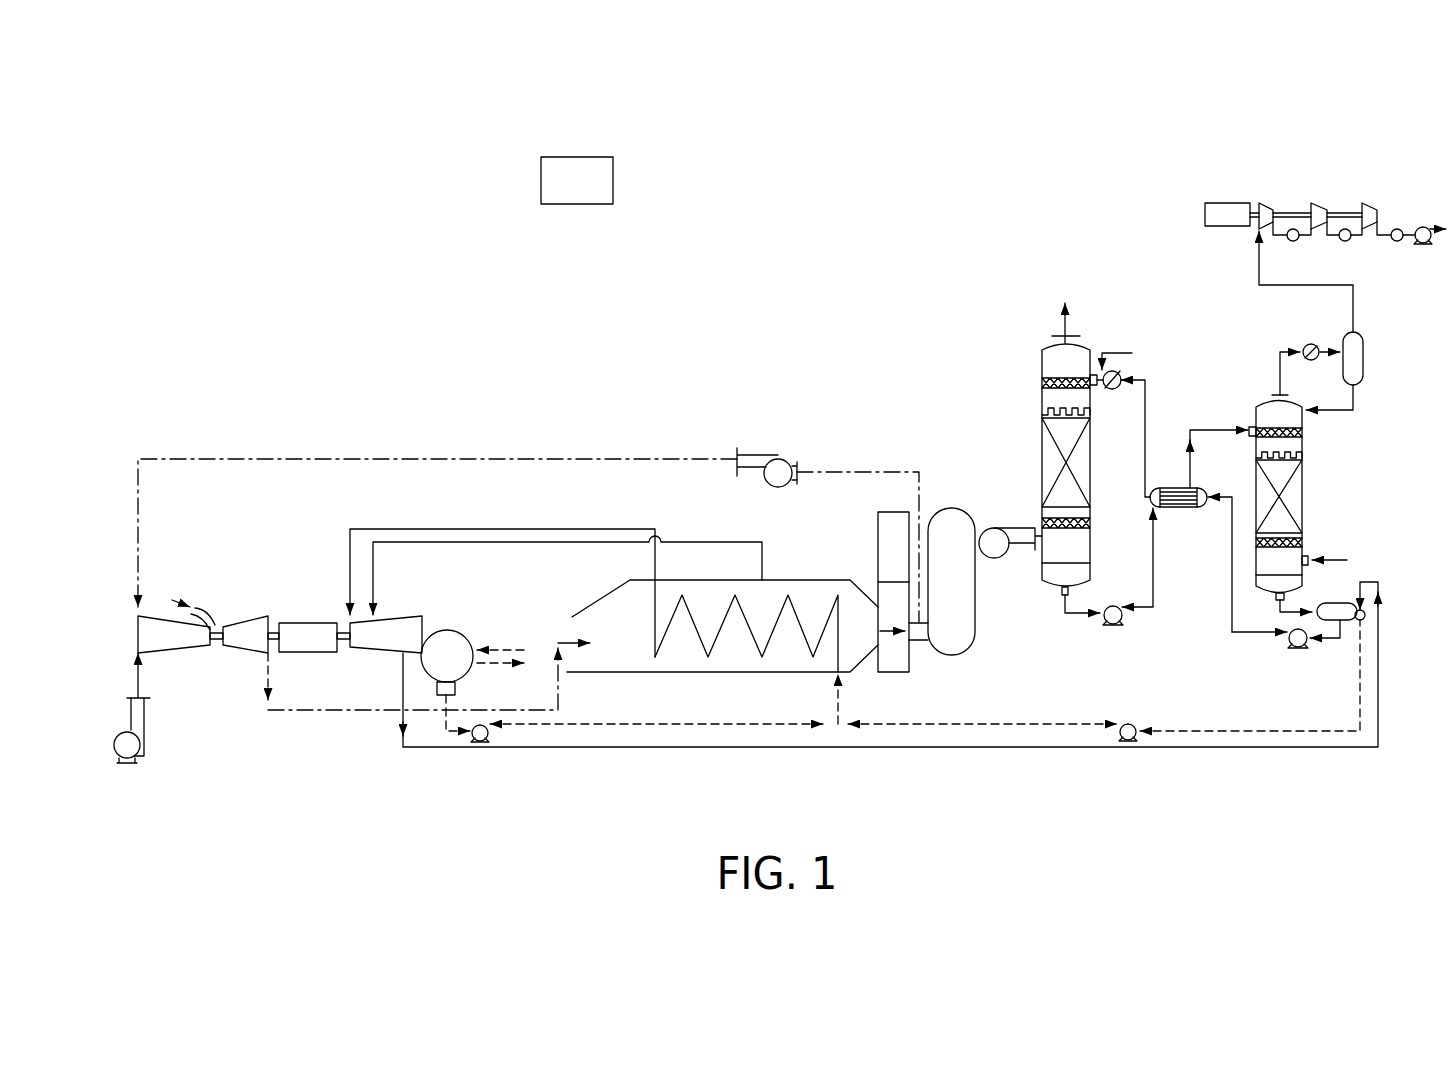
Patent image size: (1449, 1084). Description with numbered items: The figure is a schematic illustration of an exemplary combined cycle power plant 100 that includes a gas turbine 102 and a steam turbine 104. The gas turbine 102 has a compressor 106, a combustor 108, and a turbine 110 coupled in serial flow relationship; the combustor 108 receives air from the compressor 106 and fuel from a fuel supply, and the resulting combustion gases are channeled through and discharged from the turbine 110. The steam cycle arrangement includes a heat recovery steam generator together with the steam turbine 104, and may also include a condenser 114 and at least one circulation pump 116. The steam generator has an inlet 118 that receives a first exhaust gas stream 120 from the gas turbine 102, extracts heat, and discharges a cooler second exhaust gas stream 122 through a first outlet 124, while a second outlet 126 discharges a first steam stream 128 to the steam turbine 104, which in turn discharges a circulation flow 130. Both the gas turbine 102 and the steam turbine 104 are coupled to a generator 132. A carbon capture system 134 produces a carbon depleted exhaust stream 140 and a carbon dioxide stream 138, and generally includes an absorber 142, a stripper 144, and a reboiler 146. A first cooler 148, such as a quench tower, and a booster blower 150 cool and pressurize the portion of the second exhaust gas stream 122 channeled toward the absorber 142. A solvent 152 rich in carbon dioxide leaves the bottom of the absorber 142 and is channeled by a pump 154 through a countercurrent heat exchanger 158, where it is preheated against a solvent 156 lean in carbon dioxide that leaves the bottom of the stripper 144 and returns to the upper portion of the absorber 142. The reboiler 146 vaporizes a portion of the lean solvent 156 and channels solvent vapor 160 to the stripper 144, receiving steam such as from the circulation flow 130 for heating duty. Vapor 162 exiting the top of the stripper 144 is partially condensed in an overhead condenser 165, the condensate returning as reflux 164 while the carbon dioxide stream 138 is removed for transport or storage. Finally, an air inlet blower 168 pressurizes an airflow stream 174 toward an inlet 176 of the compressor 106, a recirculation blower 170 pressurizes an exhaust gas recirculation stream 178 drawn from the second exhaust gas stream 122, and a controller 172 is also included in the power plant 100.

The combined cycle power plant 100 is at (875, 178).
The gas turbine 102 is at (215, 669).
The steam turbine 104 is at (399, 615).
The compressor 106 is at (150, 612).
The combustor 108 is at (213, 612).
The turbine 110 is at (247, 617).
The condenser 114 is at (460, 630).
The circulation pump 116 is at (490, 742).
The inlet 118 is at (570, 626).
The first exhaust gas stream 120 is at (571, 646).
The second exhaust gas stream 122 is at (887, 632).
The first outlet 124 is at (862, 612).
The second outlet 126 is at (666, 570).
The first steam stream 128 is at (590, 528).
The circulation flow 130 is at (398, 735).
The generator 132 is at (302, 654).
The carbon capture system 134 is at (1299, 235).
The carbon dioxide stream 138 is at (1425, 226).
The carbon depleted exhaust stream 140 is at (1068, 331).
The absorber 142 is at (1040, 366).
The stripper 144 is at (1305, 442).
The reboiler 146 is at (1350, 604).
The first cooler 148 is at (977, 627).
The booster blower 150 is at (998, 527).
The solvent rich in carbon dioxide 152 is at (1078, 616).
The pump 154 is at (1110, 606).
The solvent lean in carbon dioxide 156 is at (1305, 645).
The heat exchanger 158 is at (1185, 508).
The solvent vapor 160 is at (1335, 559).
The vapor 162 is at (1292, 350).
The reflux 164 is at (1362, 411).
The overhead condenser 165 is at (1364, 362).
The air inlet blower 168 is at (122, 742).
The recirculation blower 170 is at (760, 452).
The controller 172 is at (556, 197).
The airflow stream 174 is at (136, 683).
The inlet 176 is at (128, 631).
The exhaust gas recirculation stream 178 is at (398, 457).